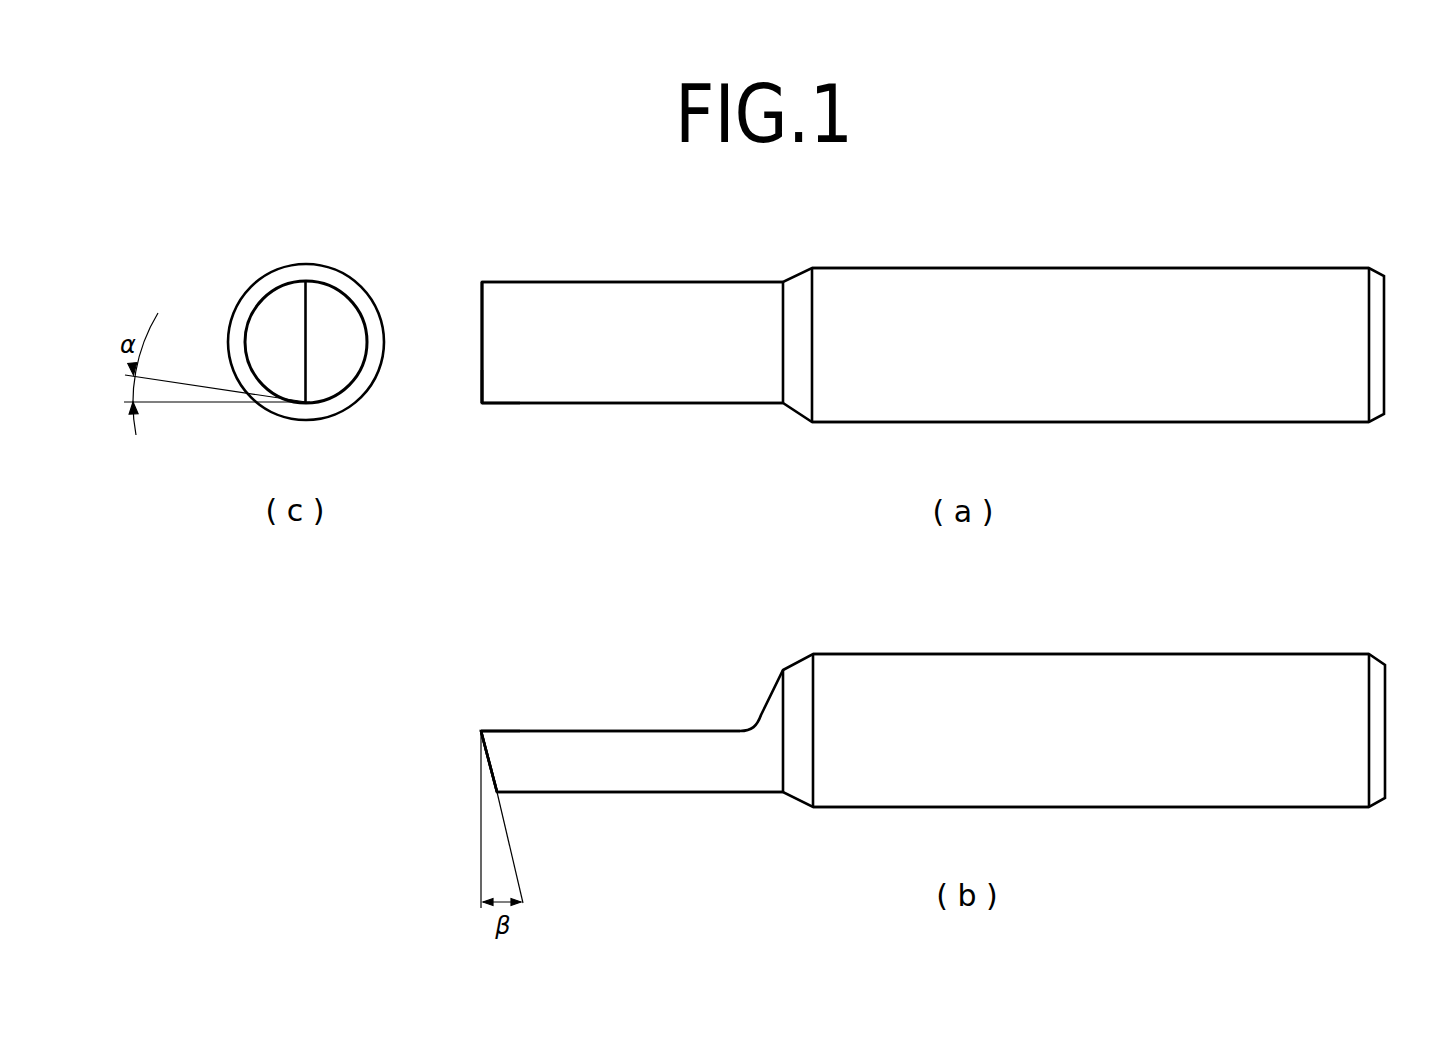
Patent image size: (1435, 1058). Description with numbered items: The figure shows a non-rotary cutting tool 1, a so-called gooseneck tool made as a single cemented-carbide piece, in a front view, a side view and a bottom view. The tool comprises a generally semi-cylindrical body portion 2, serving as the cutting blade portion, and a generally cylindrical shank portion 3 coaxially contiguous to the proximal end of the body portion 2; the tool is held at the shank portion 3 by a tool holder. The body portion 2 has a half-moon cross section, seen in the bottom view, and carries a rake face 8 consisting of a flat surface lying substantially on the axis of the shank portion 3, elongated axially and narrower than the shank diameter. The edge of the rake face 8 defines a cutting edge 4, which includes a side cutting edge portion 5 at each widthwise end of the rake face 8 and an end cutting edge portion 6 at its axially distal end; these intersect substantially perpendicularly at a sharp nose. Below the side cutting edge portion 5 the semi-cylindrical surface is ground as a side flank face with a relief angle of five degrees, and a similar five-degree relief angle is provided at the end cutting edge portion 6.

The non-rotary cutting tool 1 is at (378, 241).
The semi-cylindrical body portion 2 is at (672, 290).
The cylindrical shank portion 3 is at (1180, 401).
The cutting edge 4 is at (508, 473).
The side cutting edge portion 5 is at (502, 405).
The end cutting edge portion 6 is at (480, 385).
The rake face 8 is at (622, 355).